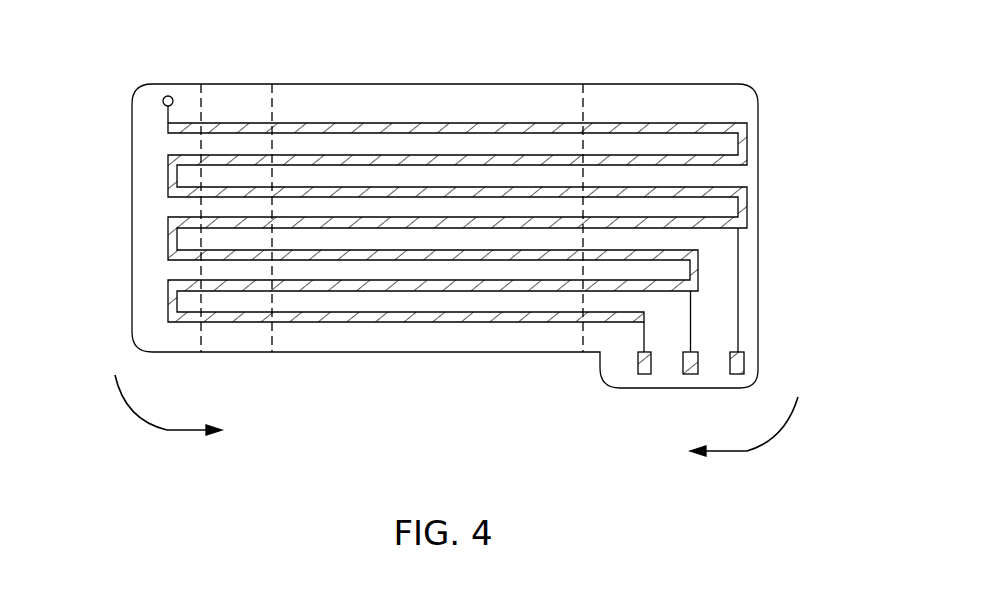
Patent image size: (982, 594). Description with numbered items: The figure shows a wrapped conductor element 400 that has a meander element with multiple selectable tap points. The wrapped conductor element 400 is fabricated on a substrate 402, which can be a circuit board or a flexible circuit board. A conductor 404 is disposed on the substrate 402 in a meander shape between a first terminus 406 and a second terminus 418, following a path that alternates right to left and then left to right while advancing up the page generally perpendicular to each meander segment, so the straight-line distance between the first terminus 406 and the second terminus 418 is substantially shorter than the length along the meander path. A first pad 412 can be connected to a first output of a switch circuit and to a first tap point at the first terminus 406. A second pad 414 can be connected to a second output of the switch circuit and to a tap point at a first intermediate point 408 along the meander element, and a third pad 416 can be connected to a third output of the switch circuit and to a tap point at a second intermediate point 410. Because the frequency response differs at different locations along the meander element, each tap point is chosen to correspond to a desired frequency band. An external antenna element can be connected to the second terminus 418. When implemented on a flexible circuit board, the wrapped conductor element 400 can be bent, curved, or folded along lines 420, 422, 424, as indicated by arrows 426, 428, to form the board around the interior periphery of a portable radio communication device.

The wrapped conductor element 400 is at (770, 42).
The substrate 402 is at (758, 132).
The conductor 404 is at (360, 123).
The first terminus 406 is at (644, 322).
The first intermediate point 408 is at (694, 291).
The second intermediate point 410 is at (742, 229).
The first pad 412 is at (645, 375).
The second pad 414 is at (691, 375).
The third pad 416 is at (738, 375).
The second terminus 418 is at (163, 101).
The fold line 420 is at (201, 84).
The fold line 422 is at (272, 84).
The fold line 424 is at (583, 84).
The arrow 426 is at (187, 432).
The arrow 428 is at (728, 453).